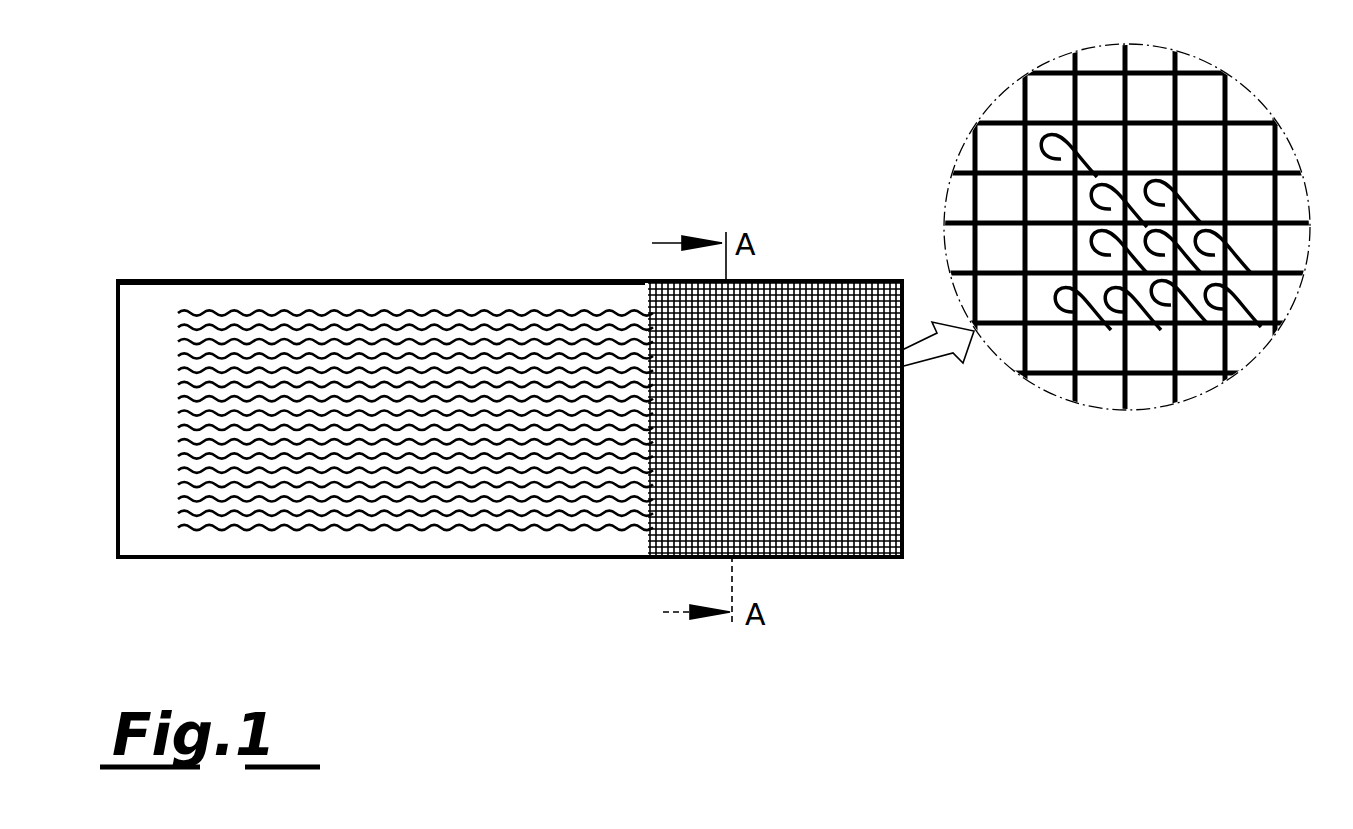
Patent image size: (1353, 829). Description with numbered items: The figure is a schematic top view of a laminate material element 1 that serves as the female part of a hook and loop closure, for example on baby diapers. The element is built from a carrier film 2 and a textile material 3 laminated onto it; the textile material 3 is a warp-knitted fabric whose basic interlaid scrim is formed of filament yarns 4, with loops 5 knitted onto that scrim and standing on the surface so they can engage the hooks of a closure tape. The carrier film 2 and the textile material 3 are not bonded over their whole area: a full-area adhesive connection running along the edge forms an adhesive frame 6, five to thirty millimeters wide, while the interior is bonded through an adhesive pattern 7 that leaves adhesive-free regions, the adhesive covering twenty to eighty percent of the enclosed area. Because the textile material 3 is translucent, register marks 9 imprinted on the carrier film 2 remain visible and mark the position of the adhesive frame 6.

The laminate material element 1 is at (807, 232).
The carrier film 2 is at (350, 560).
The textile material 3 is at (996, 344).
The filament yarns 4 is at (1150, 122).
The loops 5 is at (1242, 302).
The adhesive frame 6 is at (214, 296).
The adhesive pattern 7 is at (410, 310).
The register marks 9 is at (113, 305).